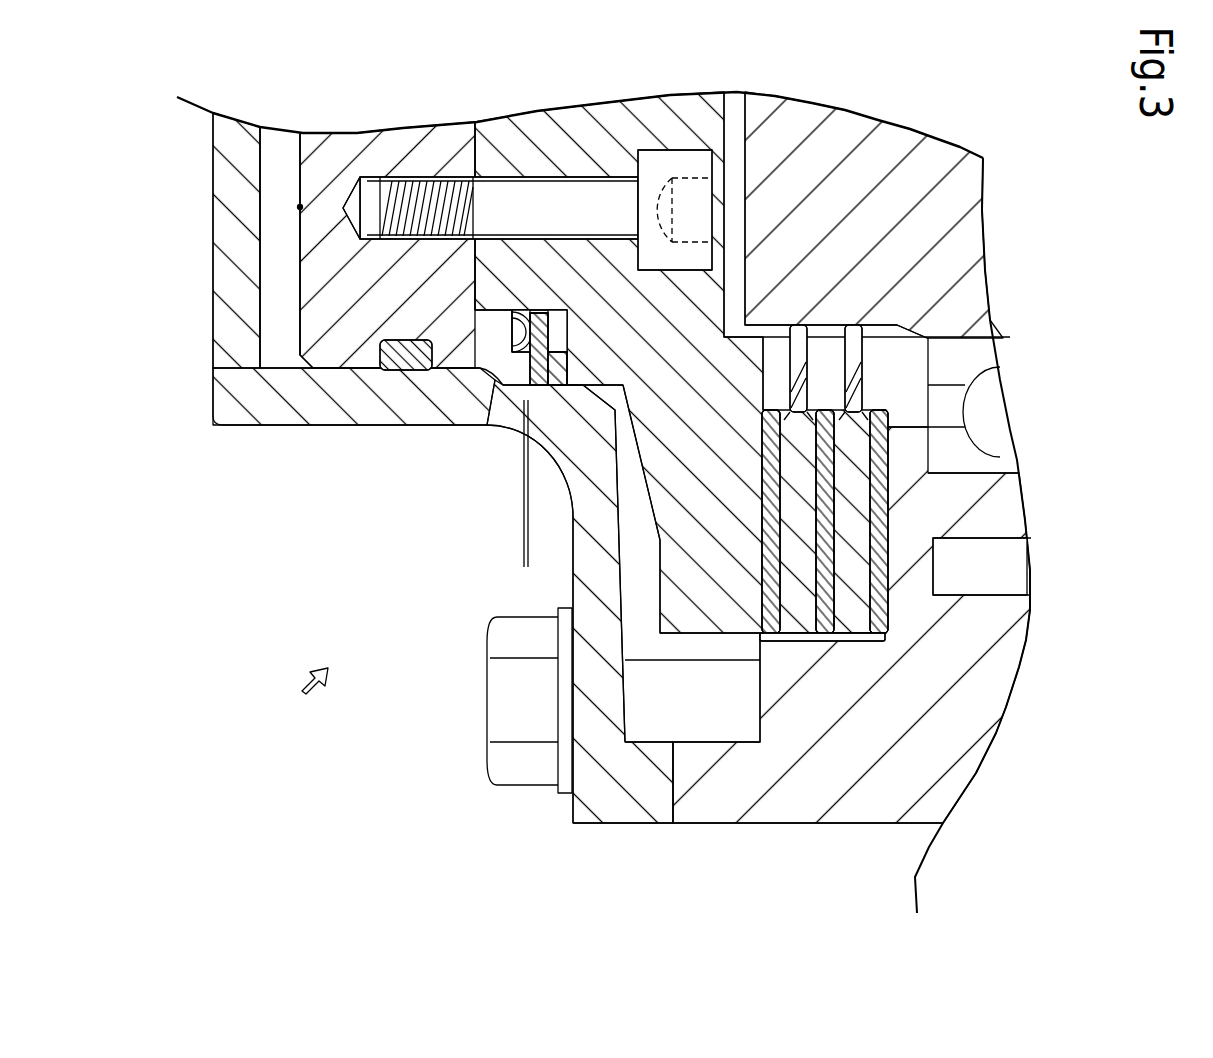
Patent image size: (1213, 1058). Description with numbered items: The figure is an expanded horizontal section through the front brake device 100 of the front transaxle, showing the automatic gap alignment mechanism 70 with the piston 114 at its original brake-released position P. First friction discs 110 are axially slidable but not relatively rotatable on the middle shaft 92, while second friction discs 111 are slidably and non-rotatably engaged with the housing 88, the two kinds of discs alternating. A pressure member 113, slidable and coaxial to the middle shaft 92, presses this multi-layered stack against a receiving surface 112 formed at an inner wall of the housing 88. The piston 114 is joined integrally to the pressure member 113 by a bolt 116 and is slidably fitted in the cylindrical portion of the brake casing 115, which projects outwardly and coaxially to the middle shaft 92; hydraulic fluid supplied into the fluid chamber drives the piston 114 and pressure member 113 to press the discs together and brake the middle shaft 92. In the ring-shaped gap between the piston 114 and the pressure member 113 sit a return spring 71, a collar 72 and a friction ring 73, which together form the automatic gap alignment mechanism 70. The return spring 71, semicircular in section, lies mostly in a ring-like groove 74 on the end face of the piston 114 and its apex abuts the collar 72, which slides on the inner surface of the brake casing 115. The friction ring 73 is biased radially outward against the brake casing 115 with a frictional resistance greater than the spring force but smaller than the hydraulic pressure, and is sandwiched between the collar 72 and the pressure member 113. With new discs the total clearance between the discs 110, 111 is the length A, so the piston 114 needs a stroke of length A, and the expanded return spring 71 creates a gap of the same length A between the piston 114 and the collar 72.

The automatic gap alignment mechanism 70 is at (484, 530).
The return spring 71 is at (523, 355).
The collar 72 is at (540, 387).
The friction ring 73 is at (553, 388).
The ring-like groove 74 is at (510, 337).
The housing 88 is at (828, 822).
The middle shaft 92 is at (850, 228).
The front brake device 100 is at (295, 696).
The first friction discs 110 is at (850, 378).
The second friction discs 111 is at (874, 642).
The receiving surface 112 is at (883, 477).
The pressure member 113 is at (714, 433).
The piston 114 is at (390, 305).
The brake casing 115 is at (235, 427).
The bolt 116 is at (547, 226).
The original brake-released position P is at (297, 207).
The length A (total clearance) A is at (538, 555).